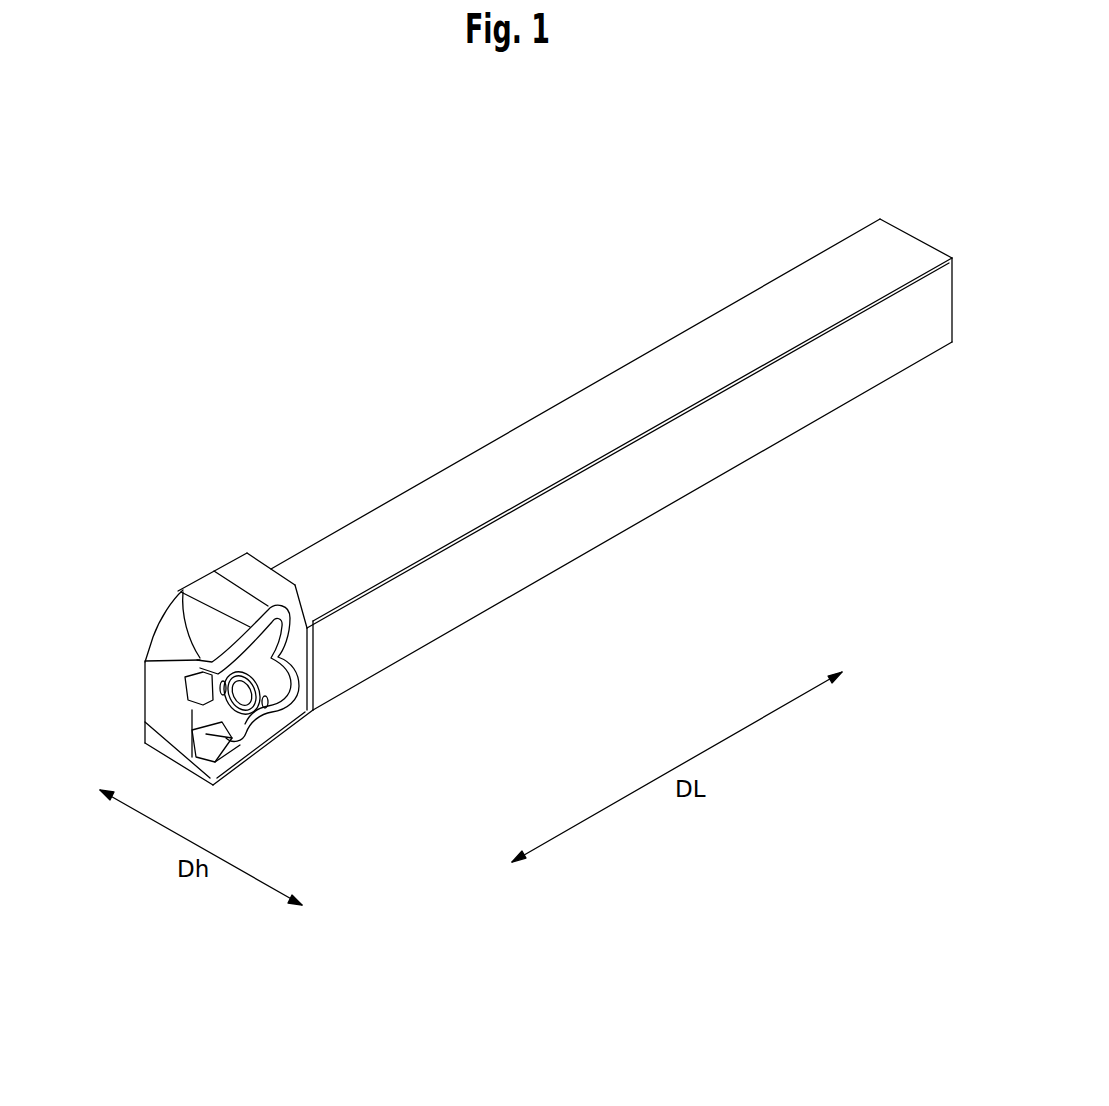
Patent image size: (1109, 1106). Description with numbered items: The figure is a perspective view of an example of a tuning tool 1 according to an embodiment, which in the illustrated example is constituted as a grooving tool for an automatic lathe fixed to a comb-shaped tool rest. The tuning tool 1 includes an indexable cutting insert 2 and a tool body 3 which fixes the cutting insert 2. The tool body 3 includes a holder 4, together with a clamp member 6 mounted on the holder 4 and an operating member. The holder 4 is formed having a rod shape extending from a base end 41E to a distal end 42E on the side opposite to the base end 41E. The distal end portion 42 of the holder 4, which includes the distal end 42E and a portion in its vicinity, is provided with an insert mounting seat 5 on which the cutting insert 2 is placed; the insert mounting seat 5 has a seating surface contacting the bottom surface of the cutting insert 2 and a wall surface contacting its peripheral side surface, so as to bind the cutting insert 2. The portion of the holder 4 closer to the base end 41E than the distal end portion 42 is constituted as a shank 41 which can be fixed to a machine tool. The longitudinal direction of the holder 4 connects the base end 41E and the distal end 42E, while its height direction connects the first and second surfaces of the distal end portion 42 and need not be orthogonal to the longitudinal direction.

The tuning tool 1 is at (458, 1092).
The cutting insert 2 is at (194, 673).
The tool body 3 is at (378, 503).
The holder 4 is at (587, 415).
The shank 41 is at (868, 240).
The base end 41E is at (915, 236).
The distal end portion 42 is at (207, 600).
The distal end 42E is at (163, 695).
The insert mounting seat 5 is at (218, 752).
The clamp member 6 is at (268, 726).